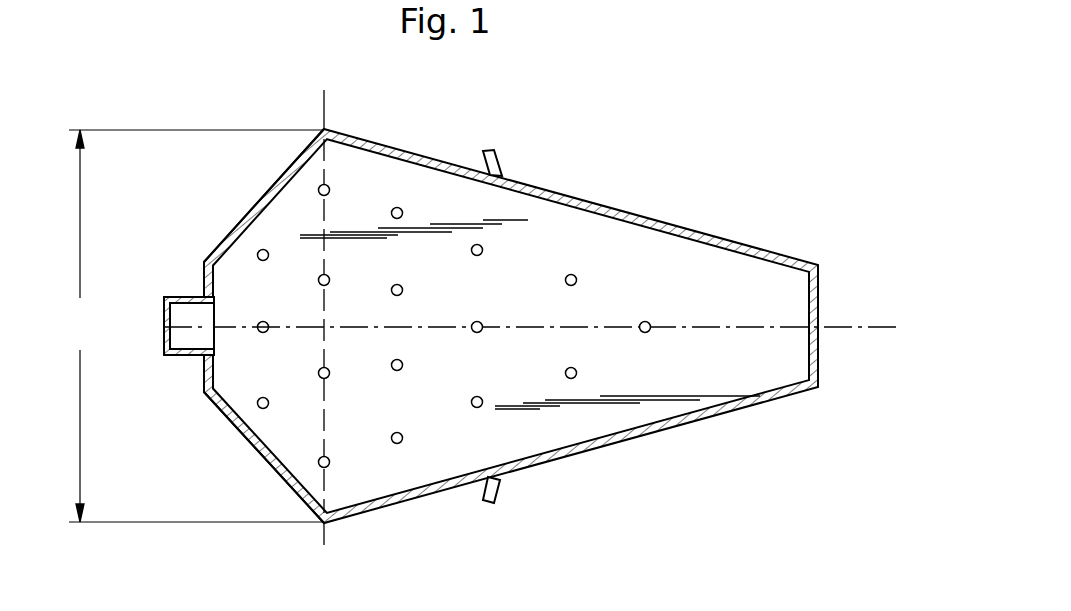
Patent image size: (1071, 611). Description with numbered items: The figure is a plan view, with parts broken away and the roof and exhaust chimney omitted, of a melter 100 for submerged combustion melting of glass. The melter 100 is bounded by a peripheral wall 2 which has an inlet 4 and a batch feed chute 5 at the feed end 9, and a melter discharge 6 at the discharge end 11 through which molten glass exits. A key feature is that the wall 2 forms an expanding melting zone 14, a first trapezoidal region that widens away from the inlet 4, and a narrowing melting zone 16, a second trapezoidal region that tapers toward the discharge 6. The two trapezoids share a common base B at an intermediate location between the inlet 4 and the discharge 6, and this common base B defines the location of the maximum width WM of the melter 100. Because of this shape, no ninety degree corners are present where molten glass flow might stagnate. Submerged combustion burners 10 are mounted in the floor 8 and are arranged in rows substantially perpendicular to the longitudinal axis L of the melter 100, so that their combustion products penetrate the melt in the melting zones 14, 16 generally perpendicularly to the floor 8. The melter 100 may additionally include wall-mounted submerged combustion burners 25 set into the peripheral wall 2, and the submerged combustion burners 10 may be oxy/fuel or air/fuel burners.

The melter 100 is at (506, 315).
The peripheral wall 2 is at (437, 160).
The inlet 4 is at (211, 333).
The batch feed chute 5 is at (183, 297).
The melter discharge 6 is at (820, 311).
The floor 8 is at (598, 247).
The feed end 9 is at (207, 378).
The submerged combustion burners 10 is at (476, 410).
The discharge end 11 is at (820, 363).
The expanding melting zone 14 is at (287, 222).
The narrowing melting zone 16 is at (657, 265).
The wall-mounted submerged combustion burners 25 is at (500, 152).
The common base B is at (324, 100).
The longitudinal axis L is at (878, 327).
The maximum width WM is at (191, 326).